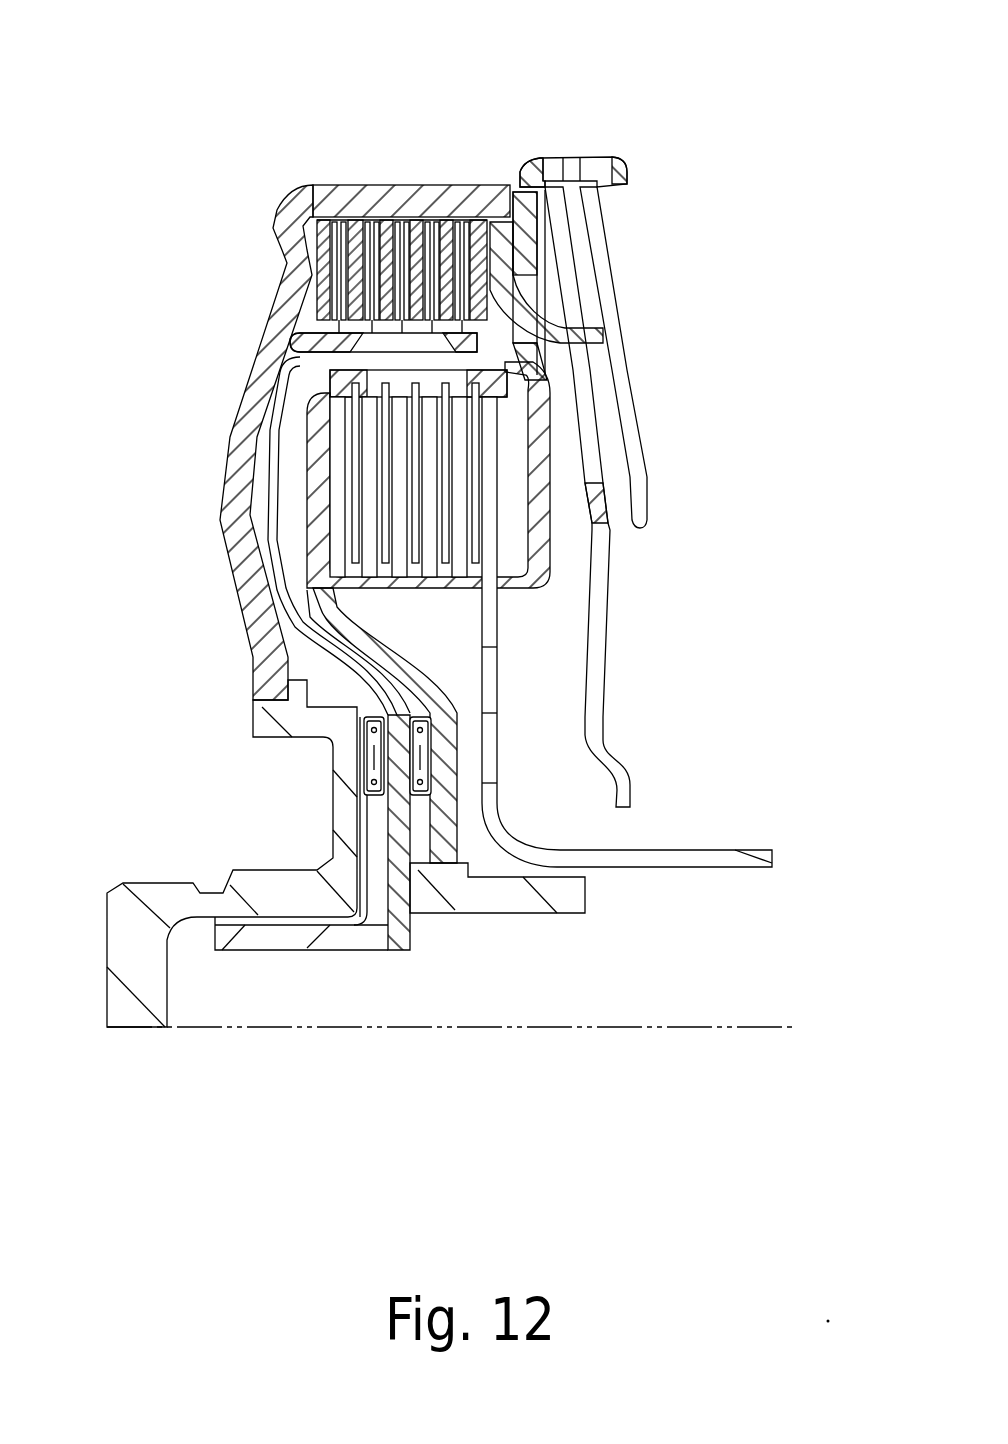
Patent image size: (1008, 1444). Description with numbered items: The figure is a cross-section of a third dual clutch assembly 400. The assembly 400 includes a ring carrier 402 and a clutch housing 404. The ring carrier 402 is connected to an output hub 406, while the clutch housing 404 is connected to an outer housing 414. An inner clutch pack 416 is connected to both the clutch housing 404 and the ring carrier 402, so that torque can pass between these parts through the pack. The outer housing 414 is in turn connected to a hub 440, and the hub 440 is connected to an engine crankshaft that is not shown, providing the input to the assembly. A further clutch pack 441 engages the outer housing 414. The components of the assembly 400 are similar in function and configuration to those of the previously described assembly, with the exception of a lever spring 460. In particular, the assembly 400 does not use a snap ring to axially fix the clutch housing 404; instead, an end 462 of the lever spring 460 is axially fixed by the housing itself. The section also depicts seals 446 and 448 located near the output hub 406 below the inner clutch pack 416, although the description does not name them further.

The dual clutch assembly 400 is at (145, 135).
The ring carrier 402 is at (300, 496).
The clutch housing 404 is at (563, 573).
The output hub 406 is at (517, 900).
The outer housing 414 is at (348, 190).
The inner clutch pack 416 is at (418, 587).
The hub 440 is at (158, 900).
The clutch pack 441 is at (416, 197).
The seal 446 is at (381, 797).
The seal 448 is at (412, 803).
The lever spring 460 is at (600, 567).
The end 462 is at (543, 168).